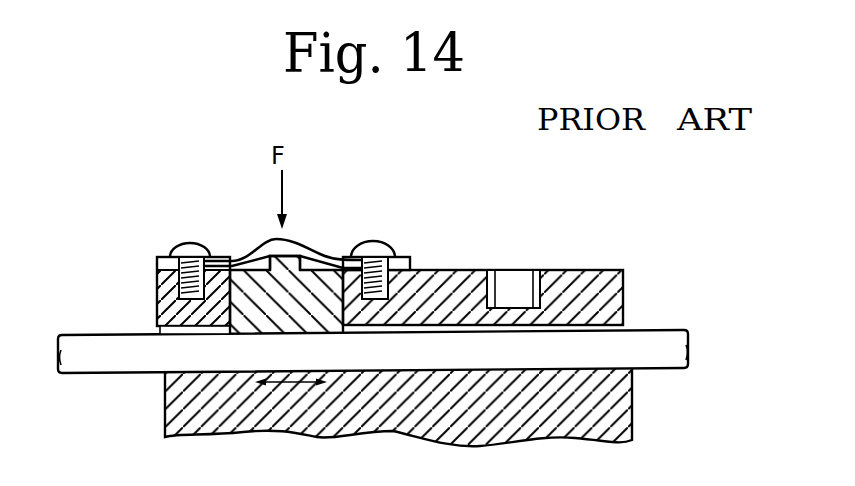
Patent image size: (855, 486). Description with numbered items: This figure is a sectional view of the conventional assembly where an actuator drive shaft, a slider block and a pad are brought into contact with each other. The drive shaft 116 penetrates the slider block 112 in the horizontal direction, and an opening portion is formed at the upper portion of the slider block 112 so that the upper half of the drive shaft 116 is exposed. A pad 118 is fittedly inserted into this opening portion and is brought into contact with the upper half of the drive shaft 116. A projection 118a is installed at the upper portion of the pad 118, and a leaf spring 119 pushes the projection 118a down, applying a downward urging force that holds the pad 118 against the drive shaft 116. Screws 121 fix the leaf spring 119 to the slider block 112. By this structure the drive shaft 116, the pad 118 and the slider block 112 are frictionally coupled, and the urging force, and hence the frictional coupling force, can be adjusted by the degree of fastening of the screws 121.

The slider block 112 is at (616, 424).
The drive shaft 116 is at (655, 343).
The pad 118 is at (251, 276).
The projection 118a is at (288, 262).
The leaf spring 119 is at (324, 262).
The screws 121 is at (190, 245).